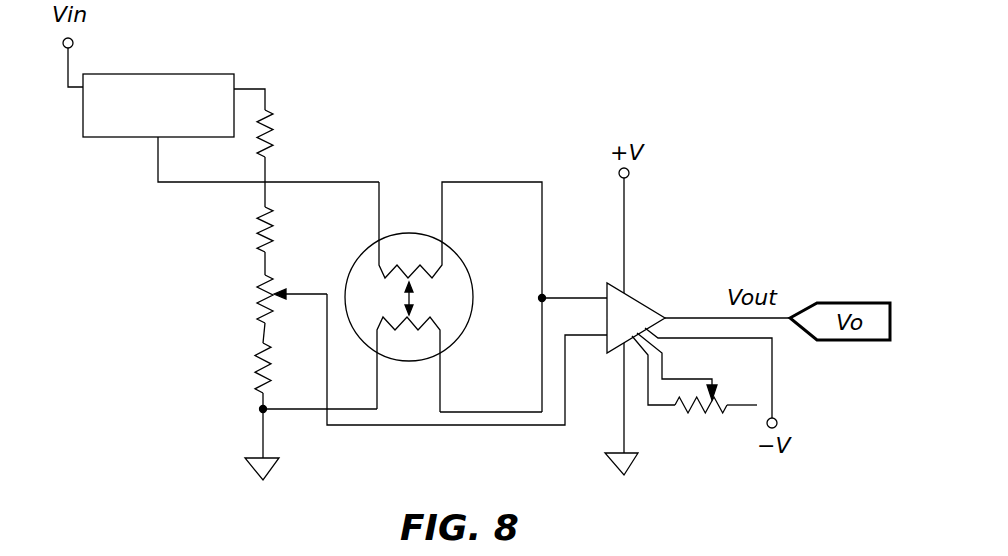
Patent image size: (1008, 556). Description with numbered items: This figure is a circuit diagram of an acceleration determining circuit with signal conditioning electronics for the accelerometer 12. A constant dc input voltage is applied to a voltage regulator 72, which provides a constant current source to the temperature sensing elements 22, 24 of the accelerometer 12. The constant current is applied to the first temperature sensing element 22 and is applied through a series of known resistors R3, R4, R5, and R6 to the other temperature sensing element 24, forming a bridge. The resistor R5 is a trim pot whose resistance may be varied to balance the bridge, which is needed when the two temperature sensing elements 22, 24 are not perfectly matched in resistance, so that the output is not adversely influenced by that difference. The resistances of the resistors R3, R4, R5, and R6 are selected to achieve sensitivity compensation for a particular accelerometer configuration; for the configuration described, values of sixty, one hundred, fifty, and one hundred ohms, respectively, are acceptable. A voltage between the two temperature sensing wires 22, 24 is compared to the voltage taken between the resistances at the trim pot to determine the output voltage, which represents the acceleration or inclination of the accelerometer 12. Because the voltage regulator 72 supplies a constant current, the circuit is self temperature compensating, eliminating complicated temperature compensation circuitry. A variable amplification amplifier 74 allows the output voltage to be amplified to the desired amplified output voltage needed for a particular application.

The accelerometer 12 is at (443, 306).
The first temperature sensing element 22 is at (418, 264).
The second temperature sensing element 24 is at (421, 332).
The voltage regulator 72 is at (206, 74).
The variable amplification amplifier 74 is at (642, 303).
The resistor R3 is at (284, 133).
The resistor R4 is at (282, 229).
The trim pot R5 is at (270, 299).
The resistor R6 is at (280, 368).